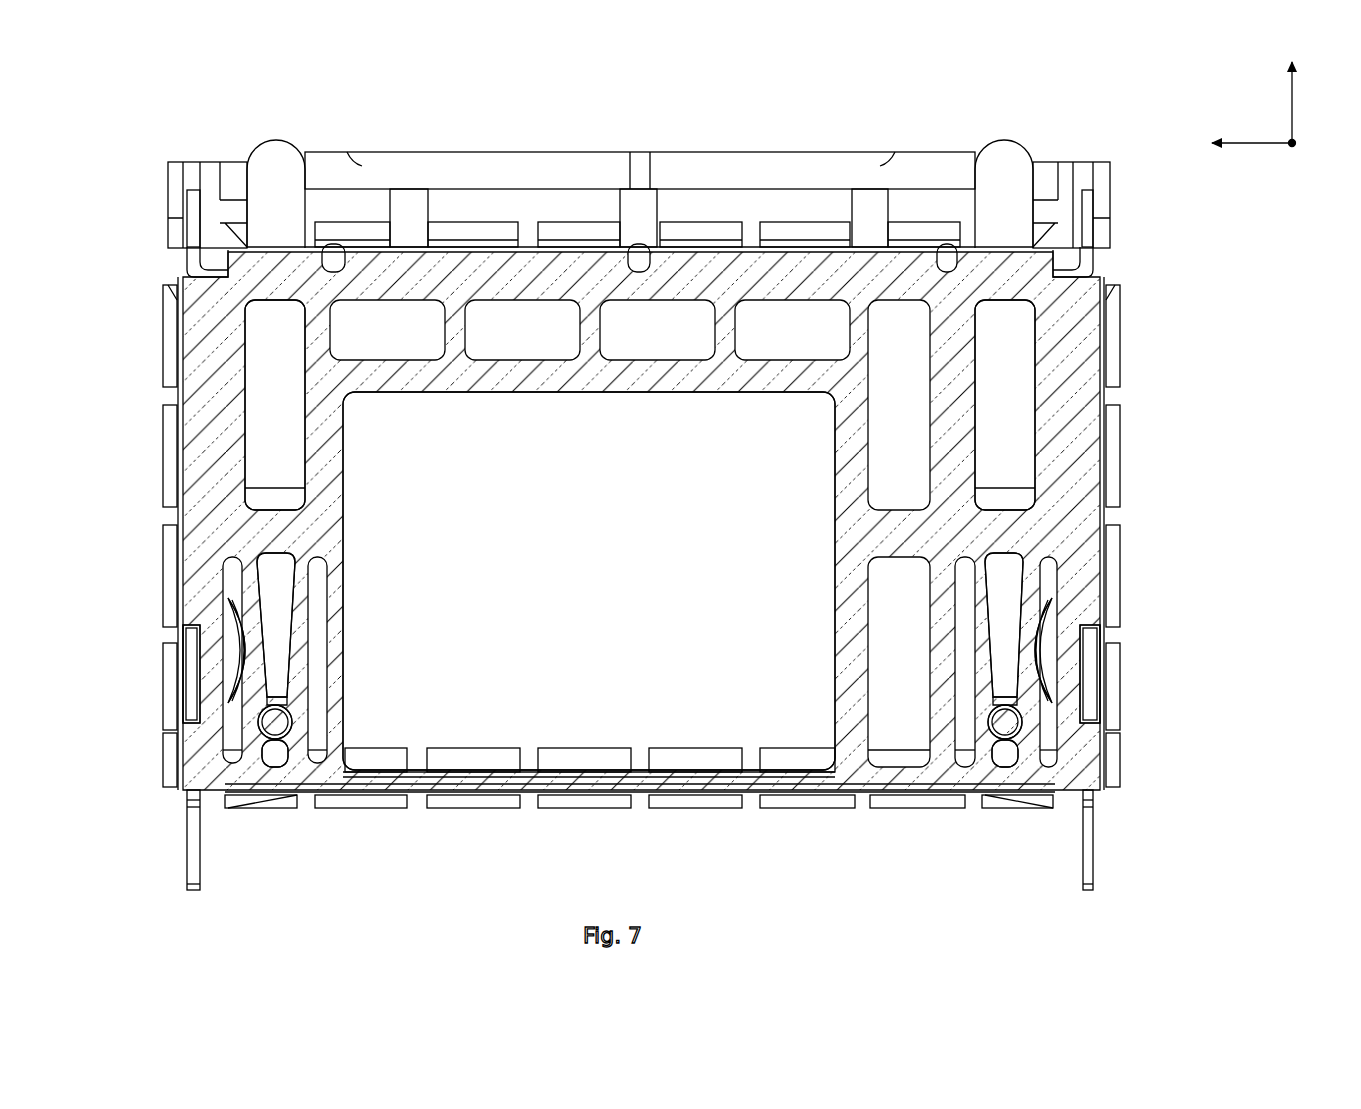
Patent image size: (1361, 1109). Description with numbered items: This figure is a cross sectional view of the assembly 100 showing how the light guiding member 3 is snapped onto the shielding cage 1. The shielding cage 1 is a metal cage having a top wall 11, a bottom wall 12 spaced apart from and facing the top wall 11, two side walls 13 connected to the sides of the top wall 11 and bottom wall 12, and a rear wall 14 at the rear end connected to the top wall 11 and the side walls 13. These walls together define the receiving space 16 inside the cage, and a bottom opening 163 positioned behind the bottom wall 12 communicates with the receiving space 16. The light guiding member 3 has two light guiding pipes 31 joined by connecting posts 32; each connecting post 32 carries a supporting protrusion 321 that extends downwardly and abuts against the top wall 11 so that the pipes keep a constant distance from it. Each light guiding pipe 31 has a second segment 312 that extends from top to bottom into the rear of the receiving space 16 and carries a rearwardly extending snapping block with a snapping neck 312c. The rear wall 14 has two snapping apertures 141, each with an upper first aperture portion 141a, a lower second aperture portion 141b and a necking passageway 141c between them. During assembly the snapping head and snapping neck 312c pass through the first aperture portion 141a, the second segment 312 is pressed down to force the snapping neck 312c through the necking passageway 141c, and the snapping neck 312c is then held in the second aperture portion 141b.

The electrical connector assembly 100 is at (112, 87).
The shielding cage 1 is at (1124, 468).
The light guiding member 3 is at (790, 146).
The top wall 11 is at (530, 240).
The bottom wall 12 is at (722, 780).
The side walls 13 is at (165, 400).
The rear wall 14 is at (1070, 305).
The receiving space 16 is at (499, 700).
The light guiding pipes 31 is at (264, 152).
The connecting posts 32 is at (721, 150).
The snapping apertures 141 is at (250, 632).
The first aperture portion 141a is at (242, 597).
The second aperture portion 141b is at (258, 727).
The necking passageway 141c is at (265, 697).
The bottom opening 163 is at (568, 780).
The second segment 312 is at (268, 350).
The snapping neck 312c is at (275, 725).
The supporting protrusion 321 is at (618, 207).